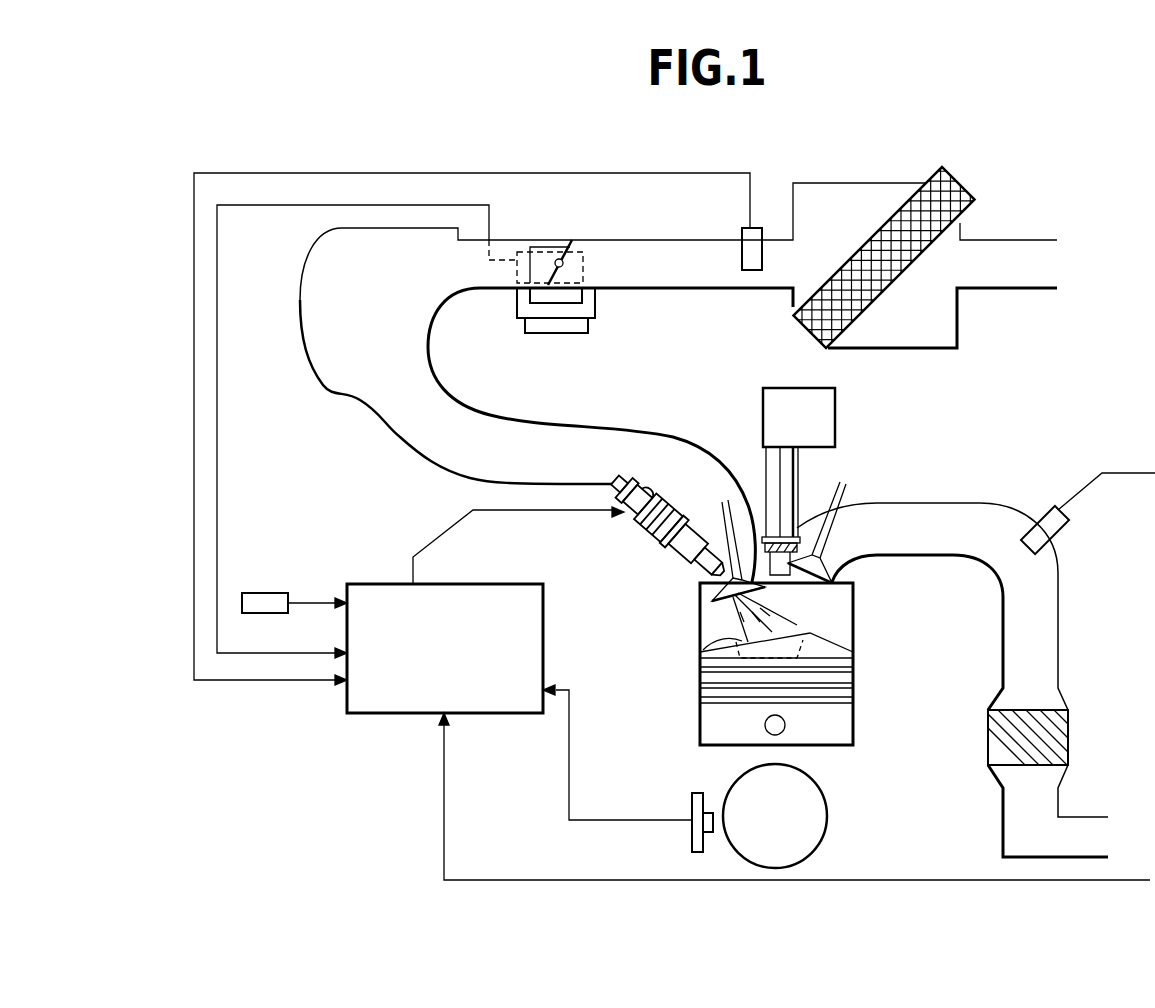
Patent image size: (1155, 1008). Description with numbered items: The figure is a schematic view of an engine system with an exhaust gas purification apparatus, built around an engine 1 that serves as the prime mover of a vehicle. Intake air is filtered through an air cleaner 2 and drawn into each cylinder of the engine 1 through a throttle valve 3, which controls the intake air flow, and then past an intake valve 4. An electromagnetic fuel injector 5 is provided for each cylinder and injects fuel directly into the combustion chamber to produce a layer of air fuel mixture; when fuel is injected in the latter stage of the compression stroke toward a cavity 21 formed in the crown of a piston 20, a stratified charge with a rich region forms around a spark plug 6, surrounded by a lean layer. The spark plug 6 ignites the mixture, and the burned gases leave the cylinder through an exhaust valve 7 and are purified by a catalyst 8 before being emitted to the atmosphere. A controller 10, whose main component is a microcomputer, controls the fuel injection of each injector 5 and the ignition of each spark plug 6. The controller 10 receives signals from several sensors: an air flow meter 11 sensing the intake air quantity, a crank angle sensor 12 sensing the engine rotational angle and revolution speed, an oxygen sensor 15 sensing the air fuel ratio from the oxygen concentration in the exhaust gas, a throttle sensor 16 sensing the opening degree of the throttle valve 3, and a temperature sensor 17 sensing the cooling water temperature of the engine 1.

The engine 1 is at (862, 434).
The air cleaner 2 is at (795, 312).
The throttle valve 3 is at (582, 252).
The intake valve 4 is at (735, 505).
The fuel injector 5 is at (645, 530).
The spark plug 6 is at (802, 490).
The exhaust valve 7 is at (850, 512).
The catalyst 8 is at (1068, 733).
The controller 10 is at (500, 716).
The air flow meter 11 is at (742, 232).
The crank angle sensor 12 is at (692, 835).
The oxygen sensor 15 is at (1068, 530).
The throttle sensor 16 is at (535, 240).
The temperature sensor 17 is at (265, 593).
The piston 20 is at (843, 679).
The cavity 21 is at (703, 650).